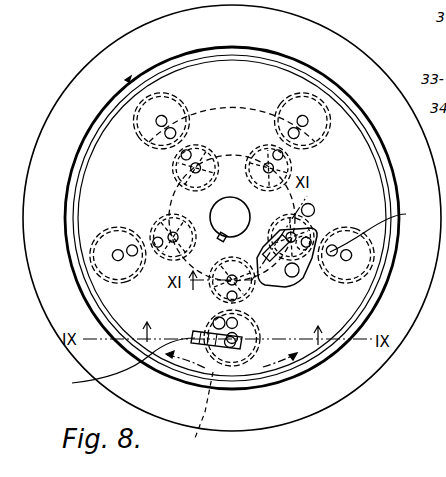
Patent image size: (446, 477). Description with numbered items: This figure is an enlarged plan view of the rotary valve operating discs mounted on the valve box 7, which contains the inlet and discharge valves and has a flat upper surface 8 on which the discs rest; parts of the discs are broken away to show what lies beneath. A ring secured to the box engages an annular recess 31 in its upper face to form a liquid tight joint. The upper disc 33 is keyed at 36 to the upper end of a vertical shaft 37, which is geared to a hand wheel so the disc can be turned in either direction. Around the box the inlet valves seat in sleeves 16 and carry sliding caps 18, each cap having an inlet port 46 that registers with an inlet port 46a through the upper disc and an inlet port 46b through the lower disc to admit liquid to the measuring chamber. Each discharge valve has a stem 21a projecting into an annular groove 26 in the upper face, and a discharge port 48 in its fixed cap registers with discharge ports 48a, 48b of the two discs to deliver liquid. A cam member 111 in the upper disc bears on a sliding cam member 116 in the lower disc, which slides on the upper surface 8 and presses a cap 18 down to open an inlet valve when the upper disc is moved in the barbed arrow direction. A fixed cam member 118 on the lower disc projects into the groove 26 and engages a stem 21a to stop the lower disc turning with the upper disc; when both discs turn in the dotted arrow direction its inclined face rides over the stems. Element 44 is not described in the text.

The valve box 7 is at (46, 92).
The upper surface 8 is at (134, 45).
The annular recess 31 is at (303, 68).
The upper disc 33 is at (227, 85).
The vertical shaft 37 is at (230, 217).
The annular groove 26 is at (170, 193).
The discharge valve stem 21a is at (262, 150).
The key 36 is at (220, 235).
The cap 18 is at (256, 444).
The sleeve 16 is at (331, 126).
The inlet port 46 is at (118, 262).
The inlet port 46a is at (214, 328).
The inlet port 46b is at (243, 318).
The discharge port 48 is at (370, 212).
The discharge port 48a is at (313, 205).
The discharge port 48b is at (298, 277).
The fixed cam member 118 is at (381, 230).
The lever 44 is at (266, 207).
The cam member 111 is at (122, 366).
The sliding cam member 116 is at (209, 416).